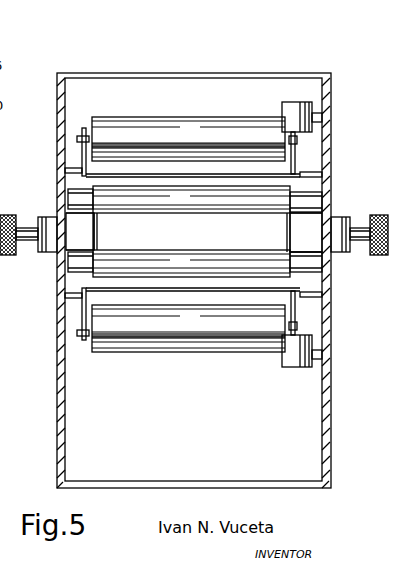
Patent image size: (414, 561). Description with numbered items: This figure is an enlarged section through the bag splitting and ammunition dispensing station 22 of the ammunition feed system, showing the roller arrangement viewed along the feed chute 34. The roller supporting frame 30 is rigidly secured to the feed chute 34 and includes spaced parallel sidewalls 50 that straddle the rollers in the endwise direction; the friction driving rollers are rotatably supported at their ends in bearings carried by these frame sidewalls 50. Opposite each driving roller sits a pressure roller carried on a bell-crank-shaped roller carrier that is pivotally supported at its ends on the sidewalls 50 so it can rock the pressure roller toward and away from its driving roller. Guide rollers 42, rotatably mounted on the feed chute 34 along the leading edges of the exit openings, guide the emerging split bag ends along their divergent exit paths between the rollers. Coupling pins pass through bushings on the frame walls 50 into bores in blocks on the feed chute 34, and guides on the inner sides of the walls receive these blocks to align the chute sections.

The bag splitting and ammunition dispensing station 22 is at (196, 73).
The frame 30 is at (333, 97).
The feed chute 34 is at (103, 241).
The guide rollers 42 is at (185, 260).
The frame sidewalls 50 is at (331, 128).